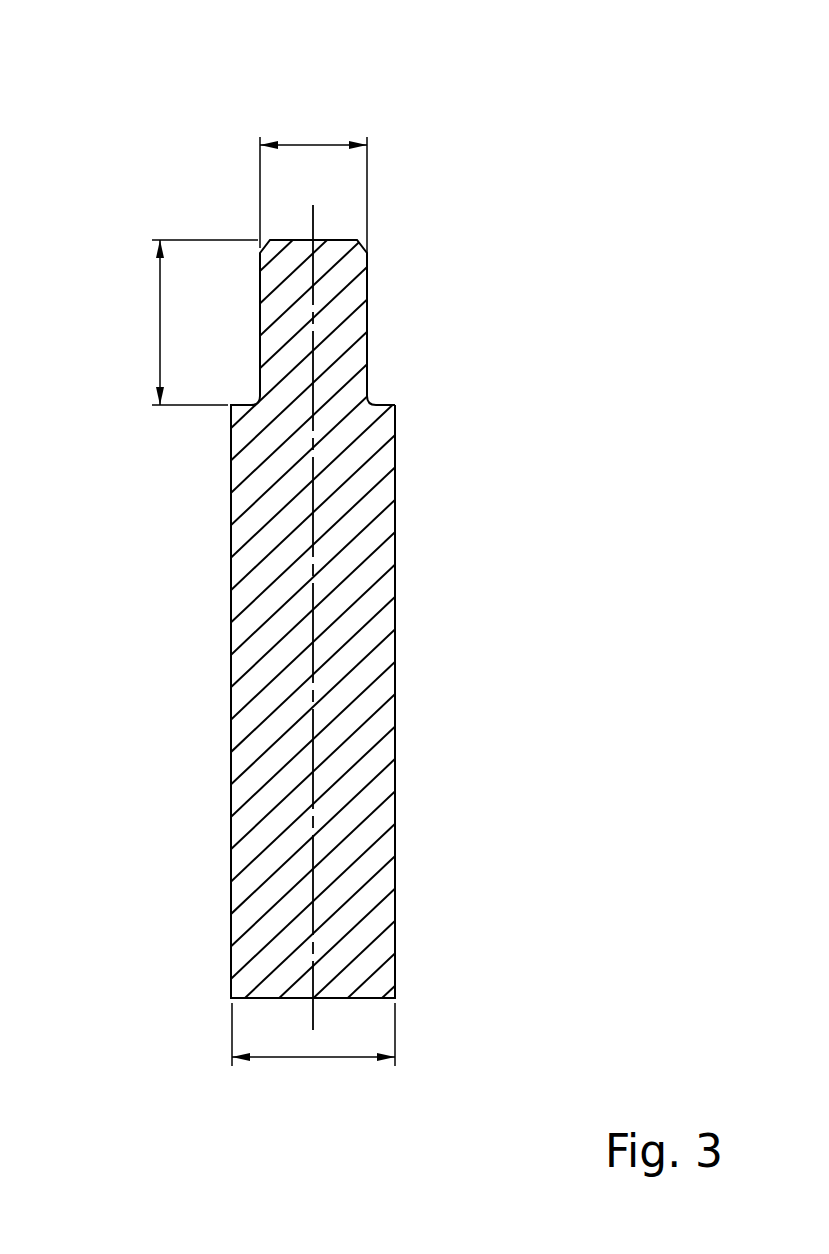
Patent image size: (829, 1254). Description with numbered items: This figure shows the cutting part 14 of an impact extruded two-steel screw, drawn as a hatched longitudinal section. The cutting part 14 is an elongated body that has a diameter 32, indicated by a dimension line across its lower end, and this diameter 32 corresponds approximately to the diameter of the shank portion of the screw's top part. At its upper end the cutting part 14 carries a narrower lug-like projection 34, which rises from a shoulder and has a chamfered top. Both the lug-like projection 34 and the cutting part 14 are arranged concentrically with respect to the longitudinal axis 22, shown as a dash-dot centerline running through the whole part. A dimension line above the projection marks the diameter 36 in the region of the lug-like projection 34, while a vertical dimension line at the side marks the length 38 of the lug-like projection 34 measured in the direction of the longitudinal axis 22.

The cutting part 14 is at (395, 600).
The longitudinal axis 22 is at (313, 217).
The diameter 32 is at (314, 1057).
The lug-like projection 34 is at (367, 313).
The diameter 36 is at (313, 145).
The length 38 is at (160, 320).